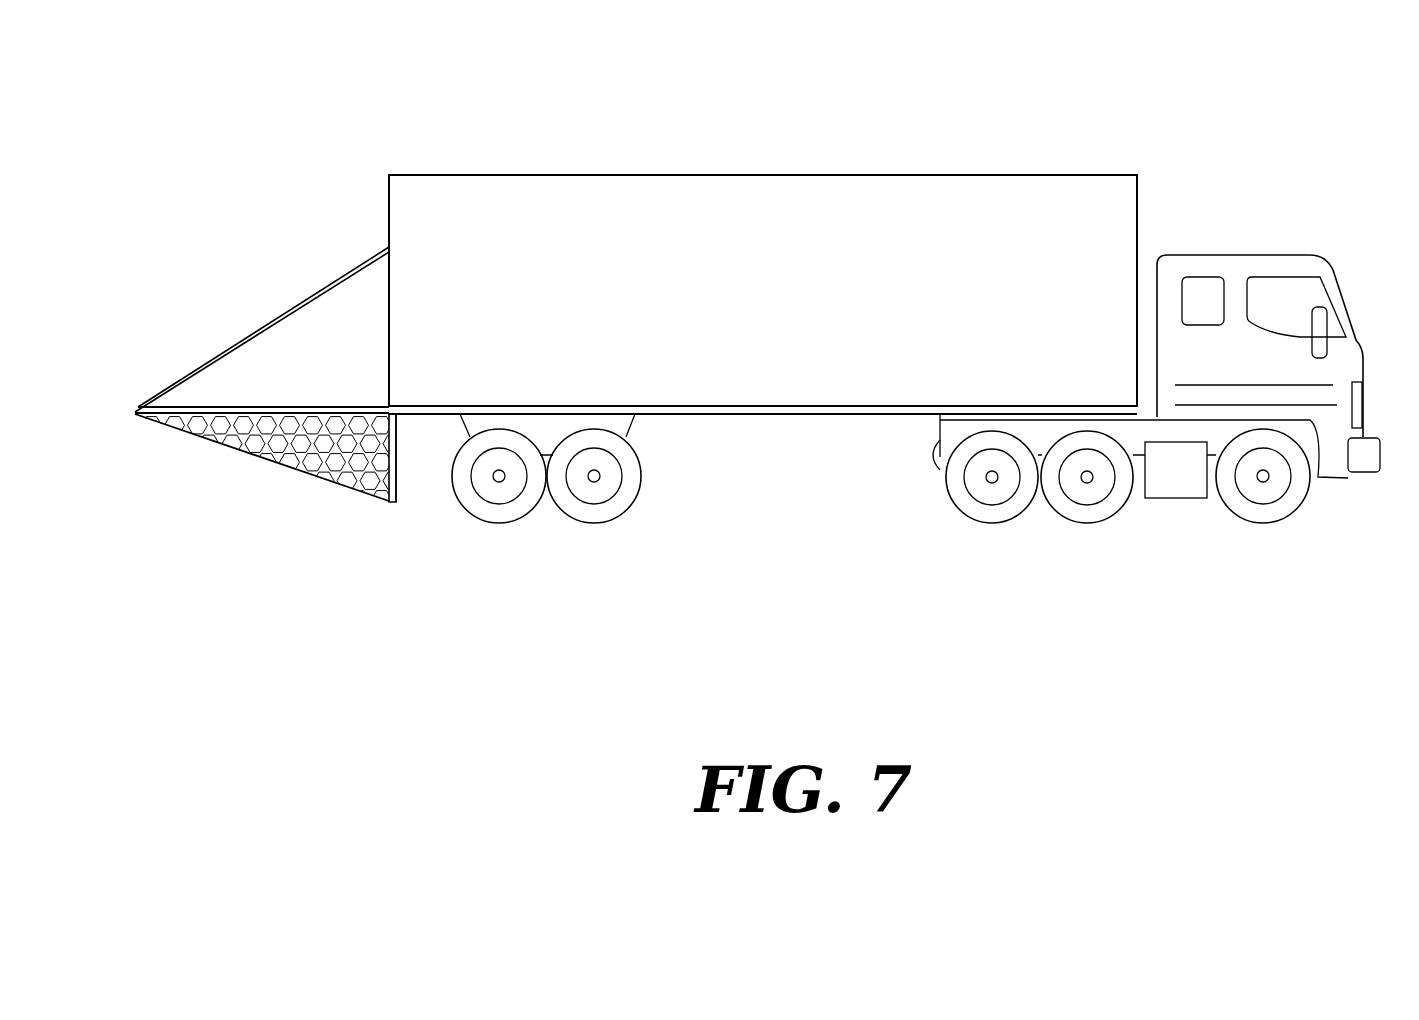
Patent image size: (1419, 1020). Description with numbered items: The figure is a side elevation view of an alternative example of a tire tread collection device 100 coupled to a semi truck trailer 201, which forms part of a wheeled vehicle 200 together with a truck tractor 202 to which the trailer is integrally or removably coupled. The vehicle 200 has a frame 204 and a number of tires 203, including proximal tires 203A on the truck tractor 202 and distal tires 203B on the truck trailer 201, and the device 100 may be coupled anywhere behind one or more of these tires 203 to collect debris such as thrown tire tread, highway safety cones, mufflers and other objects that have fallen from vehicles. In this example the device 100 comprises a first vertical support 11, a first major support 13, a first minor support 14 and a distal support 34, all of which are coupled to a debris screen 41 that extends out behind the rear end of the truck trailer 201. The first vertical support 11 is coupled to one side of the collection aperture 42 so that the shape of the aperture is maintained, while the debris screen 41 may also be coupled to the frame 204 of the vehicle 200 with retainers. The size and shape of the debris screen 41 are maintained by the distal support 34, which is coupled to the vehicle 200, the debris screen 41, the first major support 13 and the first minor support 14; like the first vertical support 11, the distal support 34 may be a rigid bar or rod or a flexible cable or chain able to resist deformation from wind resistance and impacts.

The tire tread collection device 100 is at (235, 510).
The first vertical support 11 is at (398, 495).
The first major support 13 is at (318, 480).
The first minor support 14 is at (305, 406).
The distal support 34 is at (296, 311).
The debris screen 41 is at (260, 443).
The collection aperture 42 is at (410, 458).
The vehicle 200 is at (1184, 118).
The truck trailer 201 is at (781, 146).
The truck tractor 202 is at (1343, 227).
The tires 203 is at (597, 512).
The proximal tires 203A is at (993, 512).
The distal tires 203B is at (500, 512).
The frame 204 is at (412, 405).